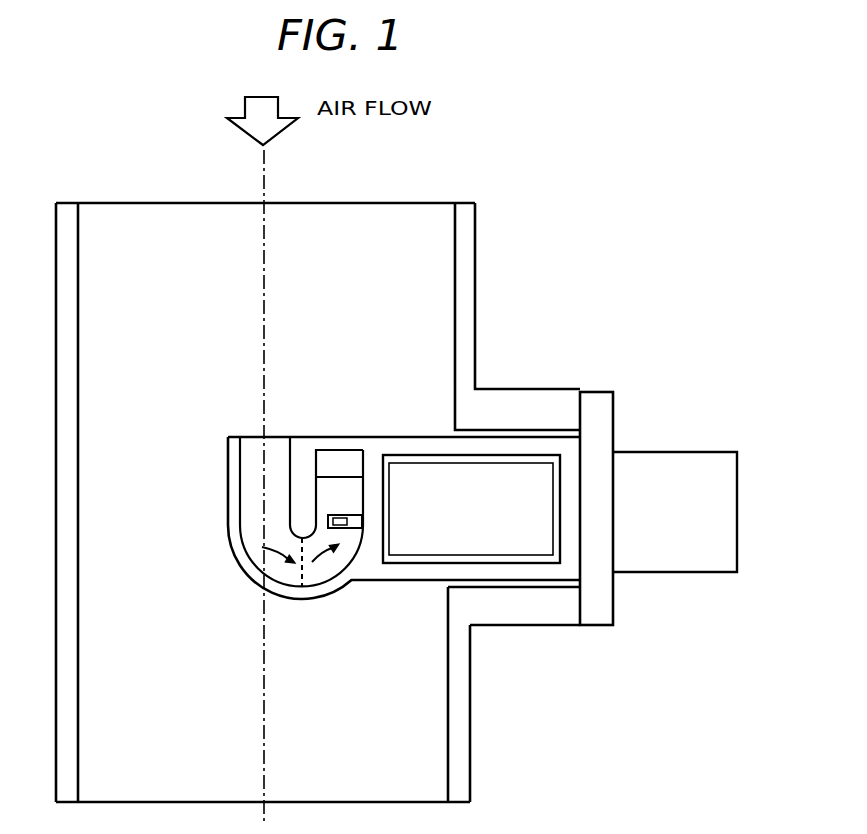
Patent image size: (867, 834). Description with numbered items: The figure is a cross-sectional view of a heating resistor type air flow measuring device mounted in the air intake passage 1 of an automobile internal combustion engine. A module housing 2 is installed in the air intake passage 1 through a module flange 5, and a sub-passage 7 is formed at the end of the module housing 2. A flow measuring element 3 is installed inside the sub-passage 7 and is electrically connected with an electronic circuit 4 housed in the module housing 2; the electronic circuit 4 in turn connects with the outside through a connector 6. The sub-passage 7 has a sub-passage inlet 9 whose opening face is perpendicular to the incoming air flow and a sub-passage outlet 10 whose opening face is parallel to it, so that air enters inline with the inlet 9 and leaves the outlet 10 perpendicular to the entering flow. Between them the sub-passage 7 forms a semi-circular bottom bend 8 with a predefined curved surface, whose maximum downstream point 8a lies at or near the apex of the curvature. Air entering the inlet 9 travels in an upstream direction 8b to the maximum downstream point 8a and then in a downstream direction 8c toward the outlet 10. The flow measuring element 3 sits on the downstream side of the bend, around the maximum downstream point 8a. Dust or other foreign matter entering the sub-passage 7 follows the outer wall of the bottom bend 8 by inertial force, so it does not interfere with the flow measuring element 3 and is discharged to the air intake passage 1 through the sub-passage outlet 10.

The air intake passage 1 is at (122, 220).
The module housing 2 is at (417, 437).
The flow measuring element 3 is at (358, 529).
The electronic circuit 4 is at (517, 543).
The module flange 5 is at (613, 413).
The connector 6 is at (660, 572).
The sub-passage 7 is at (247, 483).
The sub-passage bottom bend 8 is at (314, 568).
The maximum downstream point 8a is at (290, 592).
The upstream direction 8b is at (268, 550).
The downstream direction 8c is at (326, 567).
The sub-passage inlet 9 is at (255, 447).
The sub-passage outlet 10 is at (337, 458).